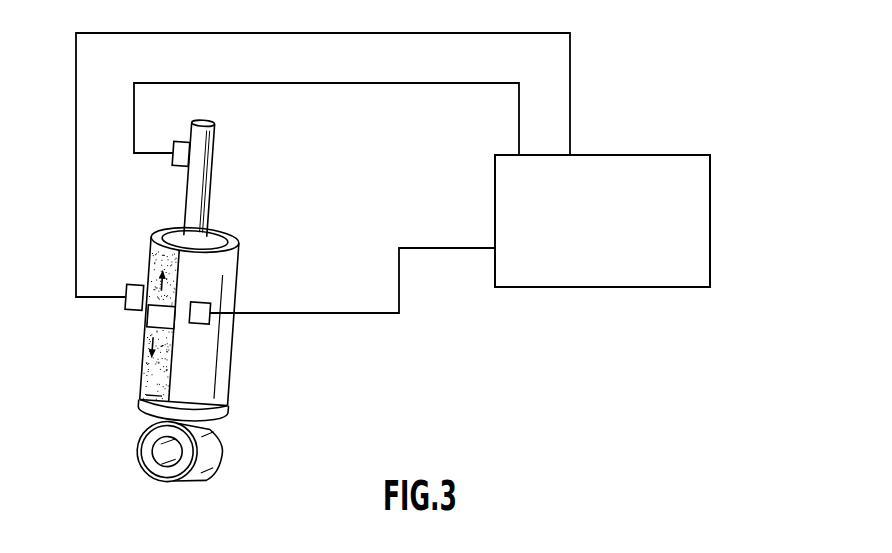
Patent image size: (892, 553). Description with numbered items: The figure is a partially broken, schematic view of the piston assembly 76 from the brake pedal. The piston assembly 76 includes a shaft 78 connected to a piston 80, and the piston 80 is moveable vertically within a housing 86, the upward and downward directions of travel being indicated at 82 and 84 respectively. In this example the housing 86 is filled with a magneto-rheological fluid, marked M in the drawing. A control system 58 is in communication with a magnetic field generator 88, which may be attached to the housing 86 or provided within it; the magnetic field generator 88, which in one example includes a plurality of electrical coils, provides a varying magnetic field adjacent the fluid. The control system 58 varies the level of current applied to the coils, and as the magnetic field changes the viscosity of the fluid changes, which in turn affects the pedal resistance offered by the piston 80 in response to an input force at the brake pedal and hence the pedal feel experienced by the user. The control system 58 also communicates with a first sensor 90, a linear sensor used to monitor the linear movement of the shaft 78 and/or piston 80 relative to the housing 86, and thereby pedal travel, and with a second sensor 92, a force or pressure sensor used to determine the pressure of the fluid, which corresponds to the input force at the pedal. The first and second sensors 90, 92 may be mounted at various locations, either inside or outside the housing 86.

The control system 58 is at (666, 155).
The piston assembly 76 is at (70, 338).
The shaft 78 is at (206, 178).
The piston 80 is at (160, 318).
The upward direction 82 is at (148, 284).
The downward direction 84 is at (148, 340).
The housing 86 is at (208, 375).
The magnetic field generator 88 is at (202, 303).
The first sensor 90 is at (180, 141).
The second sensor 92 is at (127, 305).